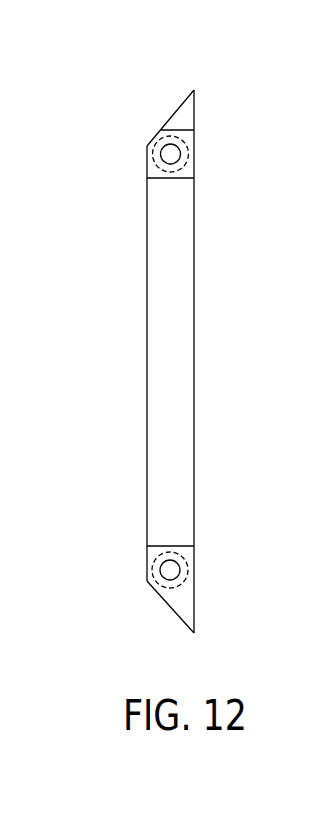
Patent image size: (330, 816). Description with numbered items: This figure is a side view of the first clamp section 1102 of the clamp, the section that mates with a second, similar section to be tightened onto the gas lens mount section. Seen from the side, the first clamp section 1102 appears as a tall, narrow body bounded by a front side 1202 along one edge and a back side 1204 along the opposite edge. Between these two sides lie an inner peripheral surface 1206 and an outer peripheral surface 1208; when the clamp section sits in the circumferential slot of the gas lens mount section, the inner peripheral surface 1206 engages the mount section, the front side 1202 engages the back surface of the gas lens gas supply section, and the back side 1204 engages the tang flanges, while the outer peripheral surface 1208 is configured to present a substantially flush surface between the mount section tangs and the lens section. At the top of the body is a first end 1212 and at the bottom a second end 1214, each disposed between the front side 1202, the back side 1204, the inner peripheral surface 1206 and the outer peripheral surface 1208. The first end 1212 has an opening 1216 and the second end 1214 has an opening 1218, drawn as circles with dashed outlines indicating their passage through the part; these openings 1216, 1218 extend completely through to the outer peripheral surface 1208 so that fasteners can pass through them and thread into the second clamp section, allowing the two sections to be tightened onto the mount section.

The first clamp section 1102 is at (108, 118).
The front side 1202 is at (194, 393).
The back side 1204 is at (147, 395).
The inner peripheral surface 1206 is at (187, 252).
The outer peripheral surface 1208 is at (176, 110).
The first end 1212 is at (192, 171).
The second end 1214 is at (187, 600).
The opening 1216 is at (176, 153).
The opening 1218 is at (176, 567).